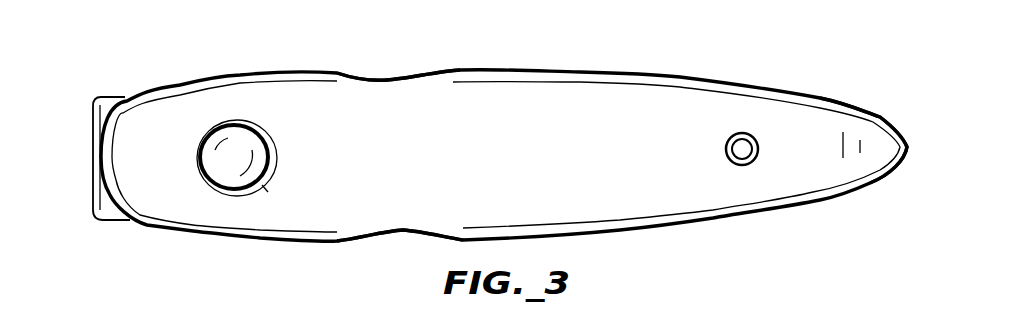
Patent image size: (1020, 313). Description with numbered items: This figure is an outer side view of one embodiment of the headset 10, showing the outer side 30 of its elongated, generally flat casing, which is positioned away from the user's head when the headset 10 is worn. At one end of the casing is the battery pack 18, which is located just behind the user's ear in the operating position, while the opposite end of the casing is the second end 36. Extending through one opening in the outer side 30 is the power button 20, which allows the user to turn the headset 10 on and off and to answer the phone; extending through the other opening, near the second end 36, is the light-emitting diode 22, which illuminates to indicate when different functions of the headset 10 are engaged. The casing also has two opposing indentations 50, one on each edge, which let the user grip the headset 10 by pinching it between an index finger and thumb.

The headset 10 is at (608, 66).
The battery pack 18 is at (122, 99).
The power button 20 is at (232, 143).
The light-emitting diode 22 is at (743, 140).
The outer side 30 is at (659, 158).
The second end 36 is at (865, 101).
The indentations 50 is at (406, 80).